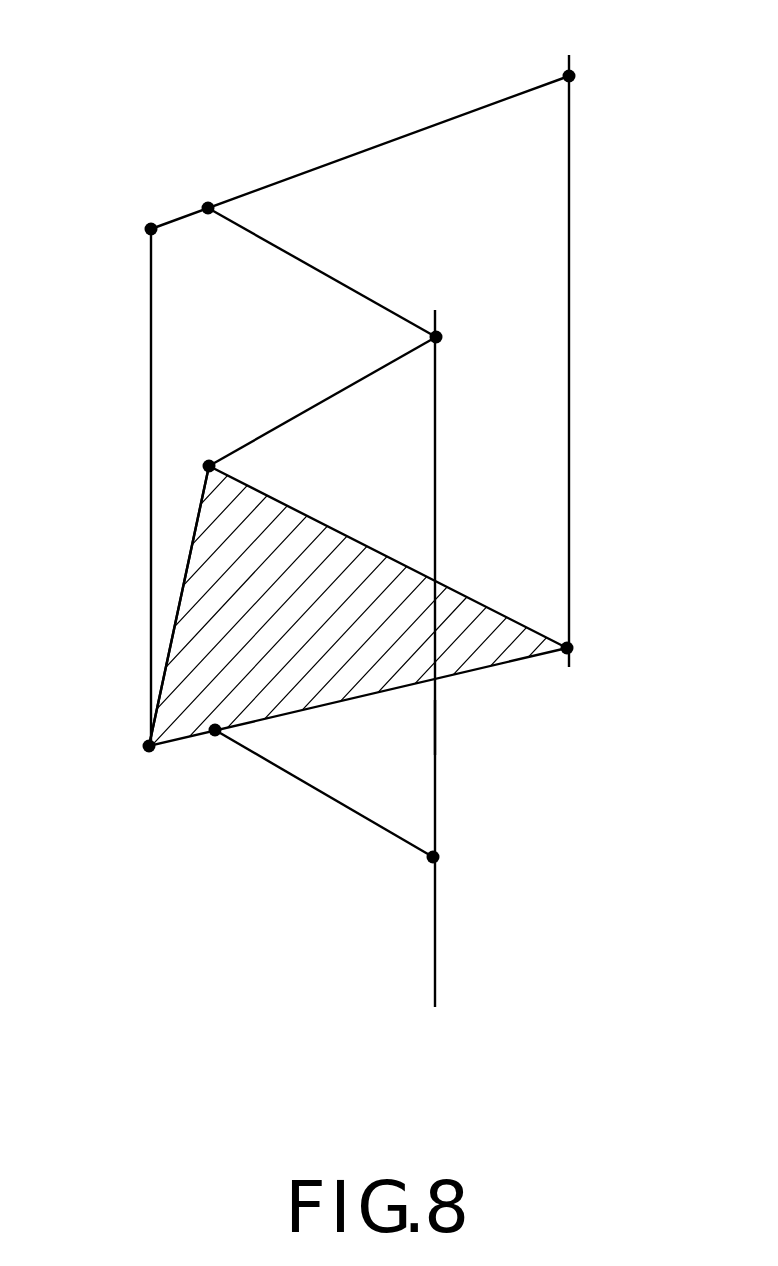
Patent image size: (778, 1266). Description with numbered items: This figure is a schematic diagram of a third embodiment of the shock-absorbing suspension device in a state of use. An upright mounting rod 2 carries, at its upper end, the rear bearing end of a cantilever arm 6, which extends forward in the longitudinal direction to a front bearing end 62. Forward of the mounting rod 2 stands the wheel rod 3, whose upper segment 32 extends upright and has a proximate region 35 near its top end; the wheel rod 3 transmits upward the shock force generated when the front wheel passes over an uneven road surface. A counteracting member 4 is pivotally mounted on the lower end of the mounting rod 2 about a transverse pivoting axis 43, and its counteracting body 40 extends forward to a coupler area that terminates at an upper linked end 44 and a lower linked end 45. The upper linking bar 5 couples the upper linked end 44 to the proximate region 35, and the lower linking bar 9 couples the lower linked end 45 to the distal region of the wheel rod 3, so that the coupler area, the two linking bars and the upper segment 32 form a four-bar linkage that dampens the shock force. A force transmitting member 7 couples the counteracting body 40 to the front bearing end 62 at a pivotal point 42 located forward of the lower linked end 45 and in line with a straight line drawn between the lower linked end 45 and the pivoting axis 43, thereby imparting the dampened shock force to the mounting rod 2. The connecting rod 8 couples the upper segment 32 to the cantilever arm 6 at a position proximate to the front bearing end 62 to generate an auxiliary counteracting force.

The mounting rod 2 is at (578, 283).
The wheel rod 3 is at (450, 788).
The force transmitting member 7 is at (136, 351).
The cantilever arm 6 is at (402, 120).
The connecting rod 8 is at (290, 273).
The upper linking bar 5 is at (362, 366).
The lower linking bar 9 is at (358, 830).
The counteracting member 4 is at (160, 541).
The counteracting body 40 is at (329, 654).
The front bearing end 62 is at (151, 229).
The proximate region 35 is at (436, 337).
The upper linked end 44 is at (209, 466).
The pivoting axis 43 is at (567, 648).
The pivotal point 42 is at (149, 746).
The lower linked end 45 is at (215, 732).
The upper segment 32 is at (436, 727).